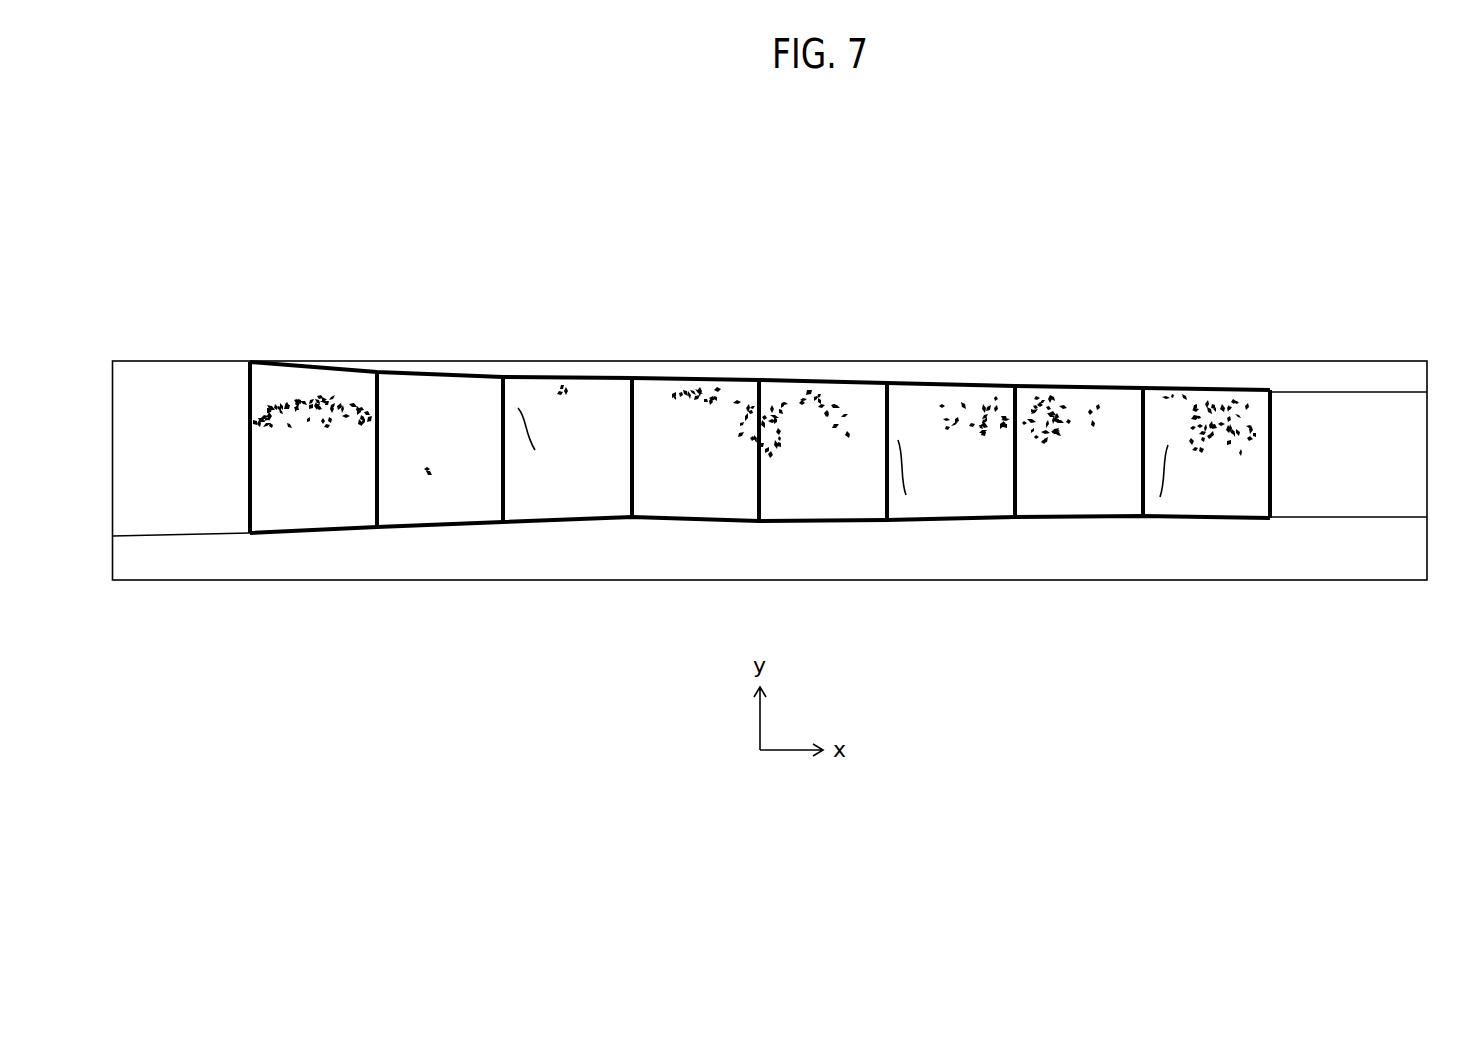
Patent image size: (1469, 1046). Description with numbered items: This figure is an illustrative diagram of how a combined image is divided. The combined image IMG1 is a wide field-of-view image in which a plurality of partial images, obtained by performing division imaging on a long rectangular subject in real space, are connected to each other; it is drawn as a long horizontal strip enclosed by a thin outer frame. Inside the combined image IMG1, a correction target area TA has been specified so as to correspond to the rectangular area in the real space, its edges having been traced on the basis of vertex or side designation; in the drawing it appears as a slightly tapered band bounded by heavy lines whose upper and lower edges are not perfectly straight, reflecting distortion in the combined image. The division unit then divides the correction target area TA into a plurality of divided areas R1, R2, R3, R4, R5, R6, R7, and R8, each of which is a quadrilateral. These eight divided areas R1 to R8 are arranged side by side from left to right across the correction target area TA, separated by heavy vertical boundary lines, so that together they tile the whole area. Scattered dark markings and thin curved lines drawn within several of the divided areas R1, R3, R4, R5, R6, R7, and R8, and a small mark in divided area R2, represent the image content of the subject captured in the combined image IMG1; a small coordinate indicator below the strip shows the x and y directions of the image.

The combined image IMG1 is at (1361, 334).
The correction target area TA is at (478, 543).
The divided area R1 is at (310, 382).
The divided area R2 is at (432, 385).
The divided area R3 is at (575, 385).
The divided area R4 is at (697, 393).
The divided area R5 is at (823, 393).
The divided area R6 is at (960, 398).
The divided area R7 is at (1073, 397).
The divided area R8 is at (1207, 407).